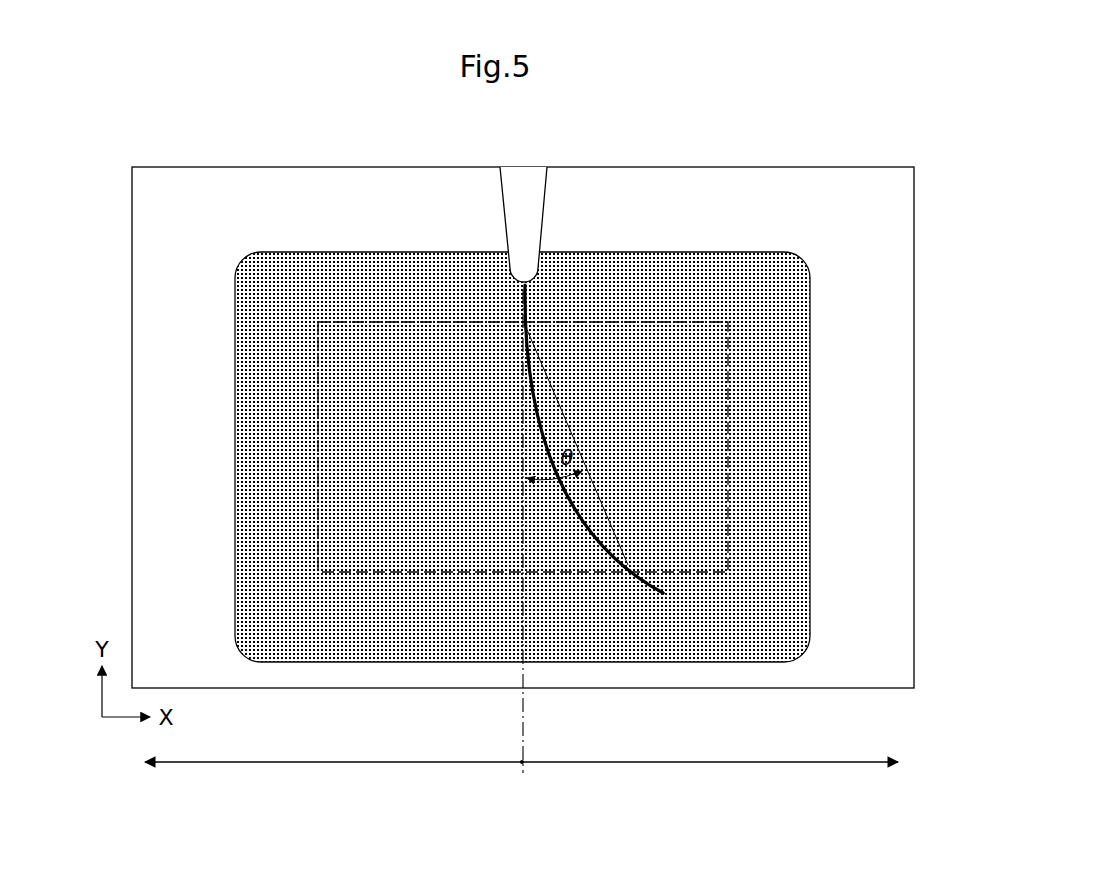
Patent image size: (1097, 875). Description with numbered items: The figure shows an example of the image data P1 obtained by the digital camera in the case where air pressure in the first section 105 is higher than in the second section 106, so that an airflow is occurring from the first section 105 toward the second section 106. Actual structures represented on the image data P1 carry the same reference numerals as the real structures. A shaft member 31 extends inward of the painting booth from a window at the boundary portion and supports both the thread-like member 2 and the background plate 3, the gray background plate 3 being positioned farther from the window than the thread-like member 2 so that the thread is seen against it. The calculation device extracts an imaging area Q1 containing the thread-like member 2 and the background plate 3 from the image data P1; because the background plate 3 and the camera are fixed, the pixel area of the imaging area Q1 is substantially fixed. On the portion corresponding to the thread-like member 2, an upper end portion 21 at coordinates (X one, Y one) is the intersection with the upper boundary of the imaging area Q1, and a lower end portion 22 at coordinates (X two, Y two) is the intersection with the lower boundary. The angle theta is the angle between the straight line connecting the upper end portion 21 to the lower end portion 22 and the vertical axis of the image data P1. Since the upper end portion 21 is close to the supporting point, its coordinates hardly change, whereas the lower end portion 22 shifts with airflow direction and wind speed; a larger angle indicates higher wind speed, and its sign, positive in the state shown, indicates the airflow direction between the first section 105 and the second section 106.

The image data P1 is at (840, 167).
The background plate 3 is at (246, 288).
The imaging area Q1 is at (730, 383).
The shaft member 31 is at (536, 213).
The upper end portion 21 is at (523, 328).
The lower end portion 22 is at (633, 567).
The thread-like member 2 is at (571, 503).
The first section 105 is at (334, 750).
The second section 106 is at (710, 749).